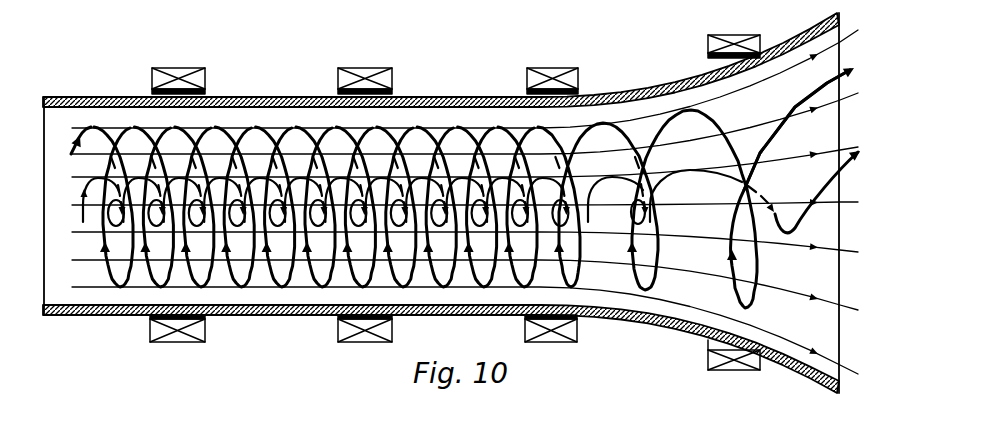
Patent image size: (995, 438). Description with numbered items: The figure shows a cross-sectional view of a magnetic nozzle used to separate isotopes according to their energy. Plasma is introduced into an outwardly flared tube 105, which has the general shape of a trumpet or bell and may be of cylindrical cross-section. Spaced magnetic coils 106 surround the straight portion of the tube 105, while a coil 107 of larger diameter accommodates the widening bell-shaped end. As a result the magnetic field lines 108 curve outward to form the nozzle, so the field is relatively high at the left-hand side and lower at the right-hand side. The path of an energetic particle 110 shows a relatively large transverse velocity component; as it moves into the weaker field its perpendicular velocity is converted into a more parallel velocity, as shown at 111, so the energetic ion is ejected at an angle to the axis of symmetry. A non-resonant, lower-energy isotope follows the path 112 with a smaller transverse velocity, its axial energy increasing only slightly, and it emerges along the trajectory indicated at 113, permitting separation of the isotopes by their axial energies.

The outwardly flared tube 105 is at (100, 97).
The magnetic coils 106 is at (338, 80).
The coil 107 is at (734, 35).
The magnetic field lines 108 is at (697, 258).
The path of an energetic particle 110 is at (277, 279).
The parallel velocity path of energetic ion 111 is at (795, 110).
The path of a non-resonant isotope 112 is at (82, 205).
The extracted inner beam 113 is at (815, 178).